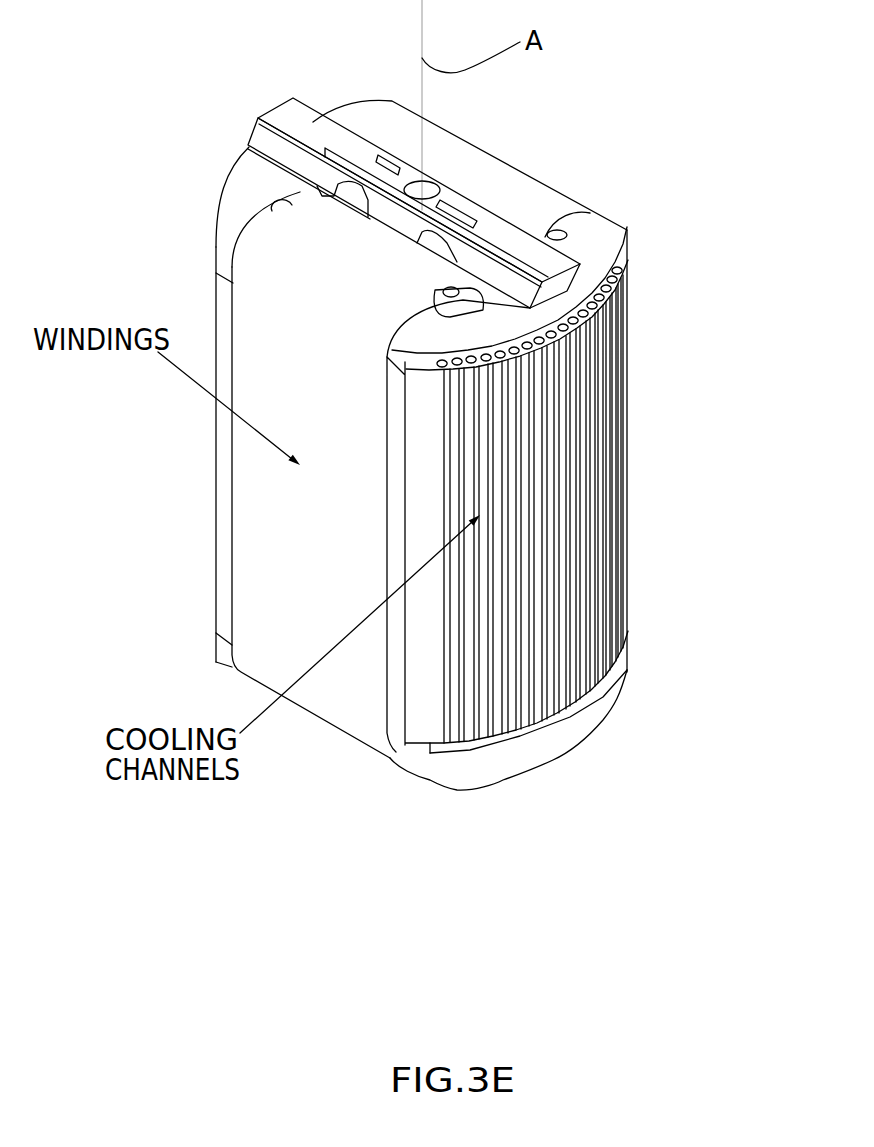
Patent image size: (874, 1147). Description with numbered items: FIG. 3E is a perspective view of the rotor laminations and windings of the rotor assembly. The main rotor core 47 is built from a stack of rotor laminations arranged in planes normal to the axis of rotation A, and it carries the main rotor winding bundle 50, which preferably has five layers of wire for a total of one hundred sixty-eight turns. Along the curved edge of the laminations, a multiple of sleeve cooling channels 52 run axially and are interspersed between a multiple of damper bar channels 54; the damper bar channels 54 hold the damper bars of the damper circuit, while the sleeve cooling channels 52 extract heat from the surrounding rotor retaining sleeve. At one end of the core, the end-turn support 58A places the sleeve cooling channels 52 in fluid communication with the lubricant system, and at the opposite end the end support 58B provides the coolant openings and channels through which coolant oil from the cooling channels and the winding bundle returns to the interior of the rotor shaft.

The main rotor core 47 is at (650, 142).
The main rotor winding bundle 50 is at (327, 557).
The sleeve cooling channels 52 is at (588, 427).
The damper bar channels 54 is at (597, 360).
The end-turn support 58A is at (632, 265).
The end support 58B is at (612, 706).